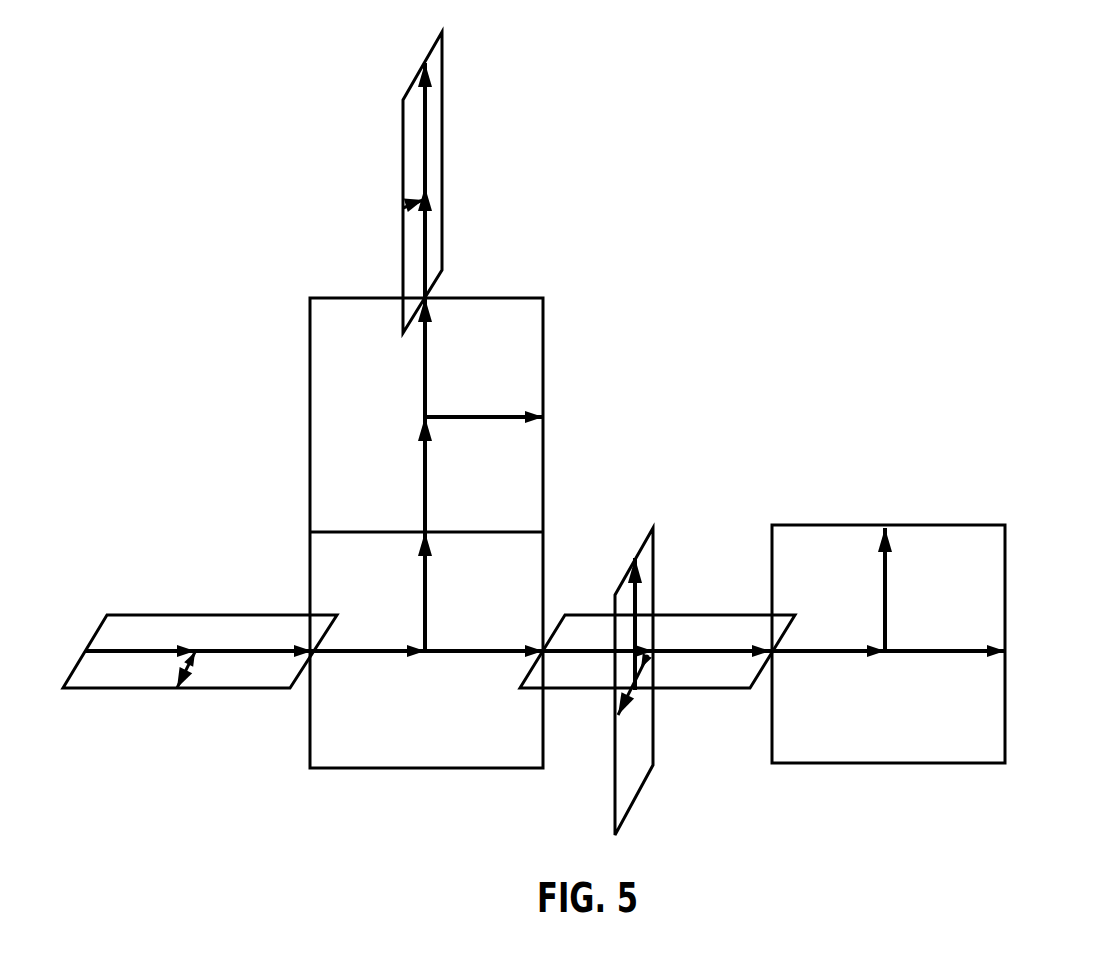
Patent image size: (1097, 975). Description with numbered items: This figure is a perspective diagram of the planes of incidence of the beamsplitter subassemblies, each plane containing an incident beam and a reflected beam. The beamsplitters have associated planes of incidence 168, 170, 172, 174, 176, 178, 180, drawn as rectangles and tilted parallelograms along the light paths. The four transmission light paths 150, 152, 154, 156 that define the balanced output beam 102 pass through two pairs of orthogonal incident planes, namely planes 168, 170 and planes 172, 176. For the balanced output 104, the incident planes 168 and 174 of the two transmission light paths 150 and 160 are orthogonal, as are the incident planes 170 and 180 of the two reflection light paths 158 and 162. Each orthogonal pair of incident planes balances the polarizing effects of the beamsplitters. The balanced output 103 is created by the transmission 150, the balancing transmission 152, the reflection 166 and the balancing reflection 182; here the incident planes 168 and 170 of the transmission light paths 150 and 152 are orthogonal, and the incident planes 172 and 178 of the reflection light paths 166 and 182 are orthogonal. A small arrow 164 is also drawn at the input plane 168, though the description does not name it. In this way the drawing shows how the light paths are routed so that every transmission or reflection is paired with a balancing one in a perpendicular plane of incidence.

The balanced output beam 102 is at (1005, 652).
The balanced output 103 is at (637, 567).
The balanced output 104 is at (408, 212).
The transmission light path 150 is at (275, 648).
The transmission light path 152 is at (487, 650).
The transmission light path 154 is at (733, 648).
The transmission light path 156 is at (963, 648).
The reflection light path 158 is at (425, 583).
The transmission light path 160 is at (425, 345).
The reflection light path 162 is at (422, 194).
The polarization component 164 is at (193, 655).
The reflection light path 166 is at (652, 662).
The plane of incidence 168 is at (80, 690).
The plane of incidence 170 is at (362, 768).
The plane of incidence 172 is at (700, 690).
The plane of incidence 174 is at (545, 328).
The plane of incidence 176 is at (862, 763).
The plane of incidence 178 is at (648, 783).
The plane of incidence 180 is at (443, 122).
The reflection light path 182 is at (598, 708).